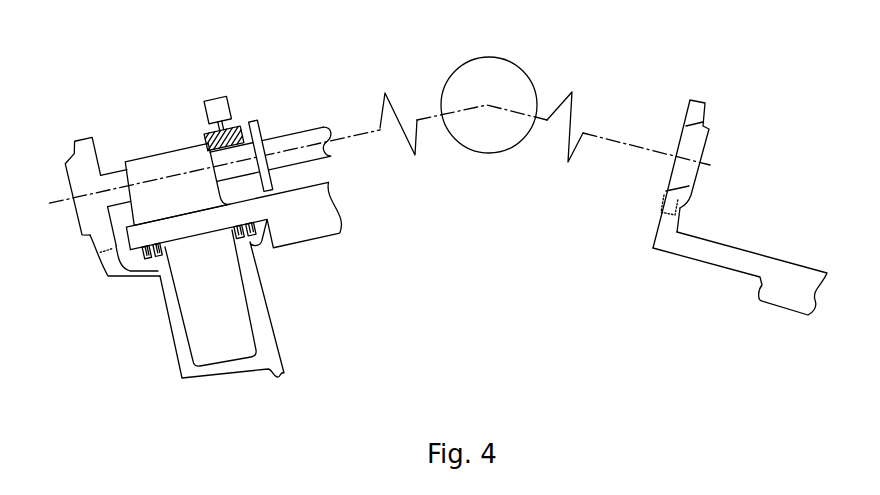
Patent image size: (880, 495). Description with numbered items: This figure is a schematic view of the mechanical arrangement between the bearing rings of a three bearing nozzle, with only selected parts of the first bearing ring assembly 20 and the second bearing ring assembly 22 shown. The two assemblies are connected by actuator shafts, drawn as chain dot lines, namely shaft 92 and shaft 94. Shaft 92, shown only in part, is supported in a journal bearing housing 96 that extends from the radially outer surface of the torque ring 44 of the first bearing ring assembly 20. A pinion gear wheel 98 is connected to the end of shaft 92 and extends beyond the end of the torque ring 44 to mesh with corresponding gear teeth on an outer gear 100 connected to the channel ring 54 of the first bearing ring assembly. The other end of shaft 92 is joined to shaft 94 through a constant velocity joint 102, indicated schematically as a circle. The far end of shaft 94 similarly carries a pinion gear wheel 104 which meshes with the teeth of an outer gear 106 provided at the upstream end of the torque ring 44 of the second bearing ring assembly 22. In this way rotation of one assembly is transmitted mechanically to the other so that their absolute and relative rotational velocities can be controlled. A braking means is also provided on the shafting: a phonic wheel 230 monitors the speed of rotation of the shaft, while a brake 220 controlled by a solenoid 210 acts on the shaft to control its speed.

The first bearing ring assembly 20 is at (110, 122).
The second bearing ring assembly 22 is at (727, 90).
The torque ring 44 is at (320, 230).
The channel ring 54 is at (180, 345).
The actuator shaft 92 is at (300, 137).
The actuator shaft 94 is at (638, 147).
The journal bearing housing 96 is at (158, 167).
The pinion gear wheel 98 is at (66, 170).
The outer gear 100 is at (98, 262).
The constant velocity joint 102 is at (490, 154).
The pinion gear wheel 104 is at (707, 120).
The outer gear 106 is at (650, 237).
The solenoid 210 is at (214, 97).
The brake 220 is at (248, 122).
The phonic wheel 230 is at (270, 197).